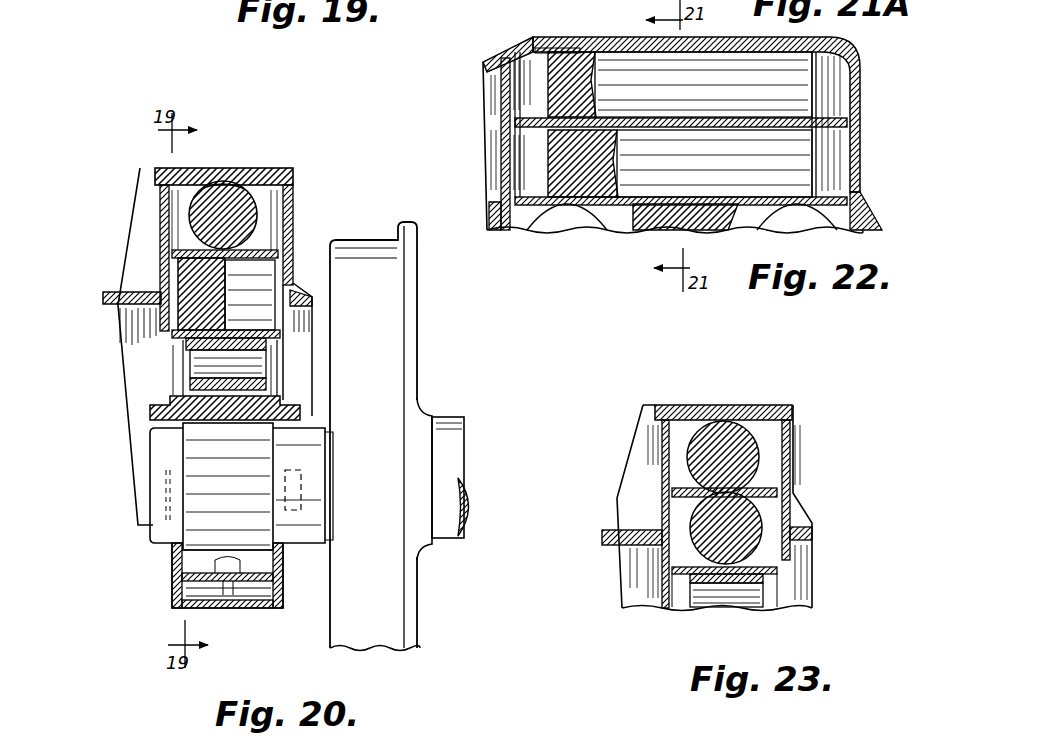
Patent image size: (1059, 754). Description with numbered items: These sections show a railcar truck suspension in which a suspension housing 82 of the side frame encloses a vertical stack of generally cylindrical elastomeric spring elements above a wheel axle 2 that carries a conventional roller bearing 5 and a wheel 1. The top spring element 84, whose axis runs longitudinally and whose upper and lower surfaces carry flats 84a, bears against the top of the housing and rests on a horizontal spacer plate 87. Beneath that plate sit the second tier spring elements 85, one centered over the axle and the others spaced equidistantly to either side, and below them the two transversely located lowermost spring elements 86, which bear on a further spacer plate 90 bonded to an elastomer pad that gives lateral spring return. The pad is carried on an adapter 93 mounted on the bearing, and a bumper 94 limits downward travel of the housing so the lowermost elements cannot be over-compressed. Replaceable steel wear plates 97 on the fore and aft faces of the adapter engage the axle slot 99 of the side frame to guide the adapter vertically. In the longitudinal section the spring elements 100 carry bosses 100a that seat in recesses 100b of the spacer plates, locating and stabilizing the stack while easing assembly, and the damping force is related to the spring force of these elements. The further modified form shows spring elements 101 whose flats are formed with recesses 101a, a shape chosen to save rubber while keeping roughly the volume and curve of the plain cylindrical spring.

In FIG. 20, the wheel 1 is at (383, 600).
In FIG. 20, the wheel axle 2 is at (448, 462).
In FIG. 20, the roller bearing 5 is at (197, 468).
In FIG. 20, the suspension housing 82 is at (300, 172).
In FIG. 20, the top spring element 84 is at (247, 217).
In FIG. 22, the top spring element 84 is at (548, 77).
In FIG. 20, the flats 84a is at (218, 187).
In FIG. 20, the second tier spring elements 85 is at (182, 273).
In FIG. 20, the lowermost spring elements 86 is at (173, 372).
In FIG. 22, the lowermost spring elements 86 is at (537, 208).
In FIG. 20, the spacer plate 87 is at (267, 252).
In FIG. 20, the spacer plate 90 is at (265, 382).
In FIG. 20, the adapter 93 is at (280, 413).
In FIG. 20, the bumper 94 is at (185, 350).
In FIG. 22, the bumper 94 is at (635, 213).
In FIG. 20, the wear plates 97 is at (155, 457).
In FIG. 20, the axle slot 99 is at (166, 362).
In FIG. 22, the spring elements 100 is at (552, 170).
In FIG. 22, the bosses 100a is at (551, 120).
In FIG. 22, the recesses 100b is at (560, 40).
In FIG. 23, the spring elements 101 is at (760, 455).
In FIG. 23, the recesses 101a is at (722, 424).